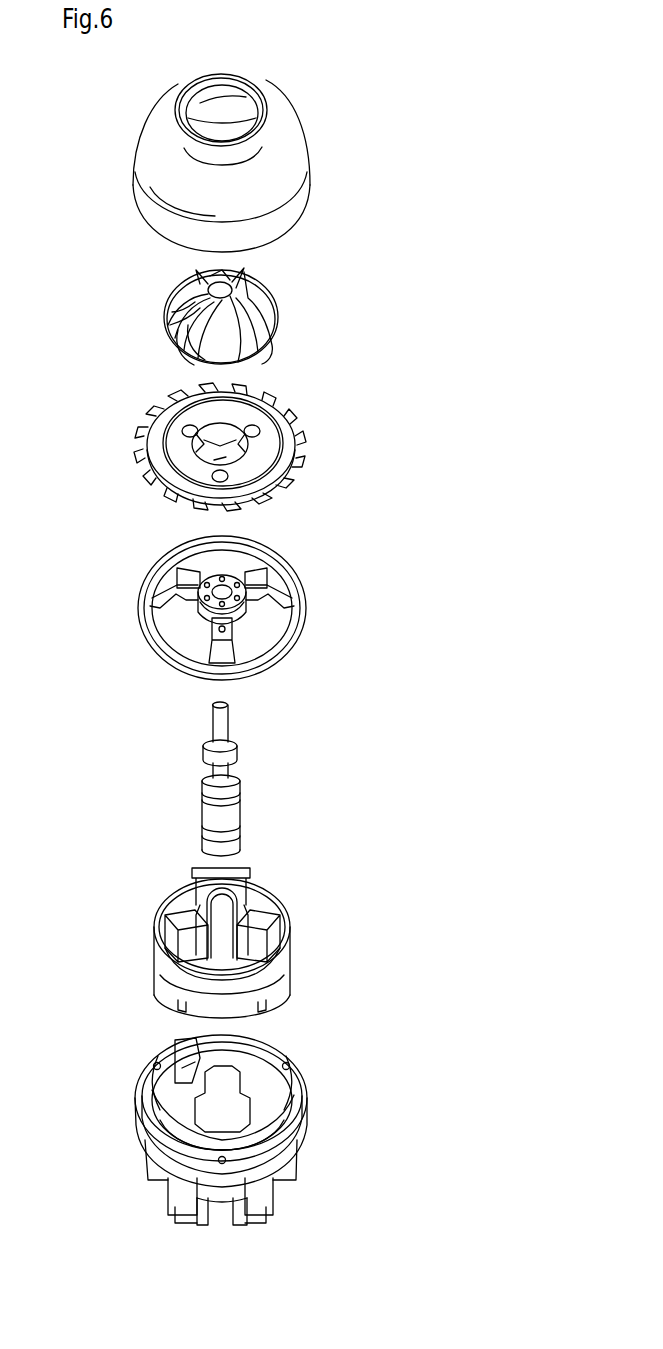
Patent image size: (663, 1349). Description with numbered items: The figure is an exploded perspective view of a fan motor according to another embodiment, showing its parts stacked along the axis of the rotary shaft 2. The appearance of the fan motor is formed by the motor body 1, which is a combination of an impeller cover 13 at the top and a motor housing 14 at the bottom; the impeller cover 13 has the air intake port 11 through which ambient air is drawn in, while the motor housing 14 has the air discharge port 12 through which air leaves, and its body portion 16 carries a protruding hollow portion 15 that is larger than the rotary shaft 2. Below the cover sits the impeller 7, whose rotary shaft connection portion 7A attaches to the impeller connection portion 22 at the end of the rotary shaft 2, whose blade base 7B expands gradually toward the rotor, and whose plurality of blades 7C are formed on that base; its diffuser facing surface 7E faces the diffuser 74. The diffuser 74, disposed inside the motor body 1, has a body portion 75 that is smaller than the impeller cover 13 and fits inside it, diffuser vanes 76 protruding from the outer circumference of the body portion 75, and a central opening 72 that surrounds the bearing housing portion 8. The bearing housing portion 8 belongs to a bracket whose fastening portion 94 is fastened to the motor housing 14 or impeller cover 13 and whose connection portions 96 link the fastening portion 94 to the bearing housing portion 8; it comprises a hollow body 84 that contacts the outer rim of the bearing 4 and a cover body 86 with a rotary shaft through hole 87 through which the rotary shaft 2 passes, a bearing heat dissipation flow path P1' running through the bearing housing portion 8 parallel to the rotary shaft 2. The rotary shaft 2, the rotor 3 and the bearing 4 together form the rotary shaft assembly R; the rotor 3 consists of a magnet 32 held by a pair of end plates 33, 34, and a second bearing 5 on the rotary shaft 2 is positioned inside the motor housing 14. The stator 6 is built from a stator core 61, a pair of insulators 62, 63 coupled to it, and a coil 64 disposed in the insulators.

The motor body 1 is at (238, 1146).
The air intake port 11 is at (235, 110).
The air discharge port 12 is at (165, 1098).
The impeller cover 13 is at (292, 136).
The motor housing 14 is at (305, 1126).
The hollow portion 15 is at (188, 1137).
The body portion 16 is at (275, 1140).
The rotary shaft 2 is at (257, 721).
The impeller connection portion 22 is at (225, 707).
The rotor 3 is at (227, 802).
The magnet 32 is at (208, 808).
The end plate 33 is at (205, 830).
The end plate 34 is at (210, 774).
The bearing 4 is at (205, 746).
The second bearing 5 is at (240, 842).
The stator 6 is at (238, 943).
The stator core 61 is at (284, 944).
The insulator 62 is at (270, 988).
The insulator 63 is at (180, 935).
The coil 64 is at (178, 900).
The impeller 7 is at (236, 313).
The rotary shaft connection portion 7A is at (206, 285).
The blade base 7B is at (270, 318).
The blades 7C is at (210, 325).
The diffuser facing surface 7E is at (172, 356).
The opening 72 is at (200, 426).
The diffuser 74 is at (260, 443).
The body portion 75 is at (290, 412).
The diffuser vane 76 is at (303, 456).
The bearing housing portion 8 is at (226, 593).
The hollow body 84 is at (250, 600).
The cover body 86 is at (248, 576).
The rotary shaft through hole 87 is at (225, 585).
The fastening portion 94 is at (142, 598).
The connection portion 96 is at (185, 568).
The bearing heat dissipation flow path P1' is at (166, 629).
The rotary shaft assembly R is at (244, 788).